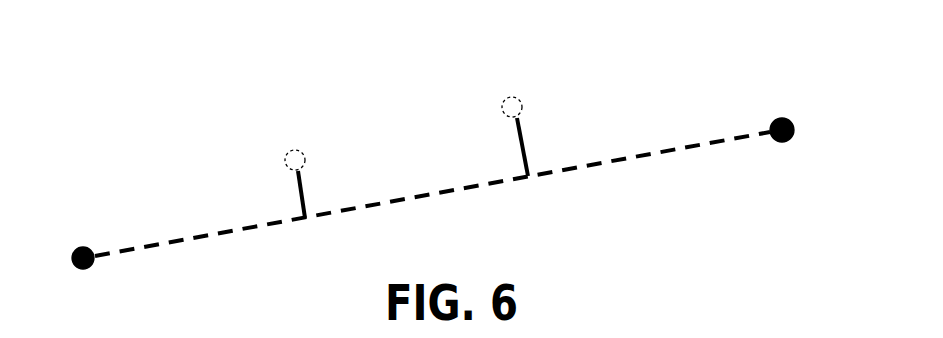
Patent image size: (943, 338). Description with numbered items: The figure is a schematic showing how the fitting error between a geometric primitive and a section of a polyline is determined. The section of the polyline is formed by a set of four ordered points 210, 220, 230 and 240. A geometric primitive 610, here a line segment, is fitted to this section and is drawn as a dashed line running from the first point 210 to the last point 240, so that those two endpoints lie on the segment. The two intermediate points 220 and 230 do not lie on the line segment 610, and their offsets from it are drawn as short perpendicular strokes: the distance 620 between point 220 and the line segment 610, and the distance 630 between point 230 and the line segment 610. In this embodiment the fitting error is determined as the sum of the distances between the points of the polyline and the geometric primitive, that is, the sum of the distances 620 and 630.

The ordered point 210 is at (85, 247).
The ordered point 220 is at (298, 150).
The ordered point 230 is at (515, 97).
The ordered point 240 is at (790, 118).
The geometric primitive 610 is at (662, 152).
The distance 620 is at (301, 186).
The distance 630 is at (518, 140).